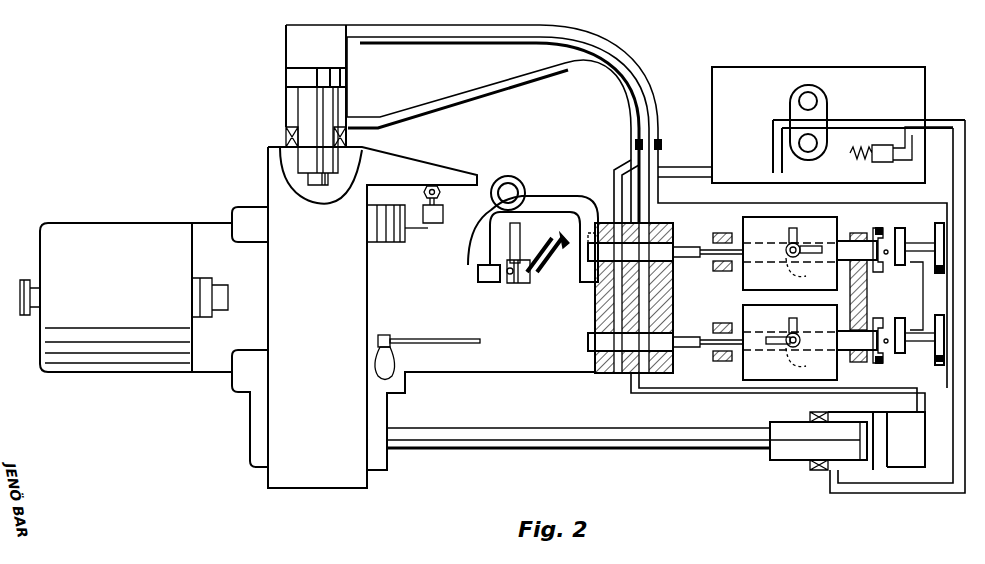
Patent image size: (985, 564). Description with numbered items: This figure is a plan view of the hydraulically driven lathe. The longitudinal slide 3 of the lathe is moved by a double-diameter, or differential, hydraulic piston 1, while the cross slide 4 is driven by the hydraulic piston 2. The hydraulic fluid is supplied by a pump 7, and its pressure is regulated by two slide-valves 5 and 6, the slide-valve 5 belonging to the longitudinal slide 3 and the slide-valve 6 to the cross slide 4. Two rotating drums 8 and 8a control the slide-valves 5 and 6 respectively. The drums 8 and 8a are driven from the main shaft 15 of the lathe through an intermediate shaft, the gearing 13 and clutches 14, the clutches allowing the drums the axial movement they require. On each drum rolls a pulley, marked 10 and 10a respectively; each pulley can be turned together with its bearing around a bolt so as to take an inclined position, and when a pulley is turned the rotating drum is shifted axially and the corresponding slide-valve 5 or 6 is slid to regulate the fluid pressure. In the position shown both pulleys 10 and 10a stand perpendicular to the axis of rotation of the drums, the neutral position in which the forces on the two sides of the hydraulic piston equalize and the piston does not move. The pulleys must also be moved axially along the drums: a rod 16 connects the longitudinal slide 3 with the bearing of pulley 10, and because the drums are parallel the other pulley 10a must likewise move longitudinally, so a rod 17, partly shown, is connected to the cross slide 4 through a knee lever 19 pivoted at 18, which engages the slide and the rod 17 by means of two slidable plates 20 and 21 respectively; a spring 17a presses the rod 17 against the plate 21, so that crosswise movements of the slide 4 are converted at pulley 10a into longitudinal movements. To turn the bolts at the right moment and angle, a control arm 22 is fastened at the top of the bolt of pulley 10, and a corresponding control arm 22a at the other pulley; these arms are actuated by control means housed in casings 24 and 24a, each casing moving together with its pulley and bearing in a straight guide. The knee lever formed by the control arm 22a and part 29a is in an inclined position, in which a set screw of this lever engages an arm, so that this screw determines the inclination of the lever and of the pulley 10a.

The differential hydraulic piston 1 is at (878, 462).
The hydraulic piston 2 is at (288, 78).
The longitudinal slide 3 is at (245, 380).
The cross slide 4 is at (286, 444).
The slide-valve 5 is at (598, 342).
The slide-valve 6 is at (605, 235).
The pump 7 is at (812, 100).
The rotating drum 8 is at (712, 338).
The rotating drum 8a is at (708, 262).
The pulley 10 is at (798, 364).
The pulley 10a is at (785, 276).
The gearing 13 is at (34, 298).
The clutches 14 is at (886, 350).
The main shaft 15 is at (216, 298).
The rod 16 is at (446, 340).
The rod 17 is at (536, 255).
The spring 17a is at (560, 236).
The pivot 18 is at (507, 183).
The knee lever 19 is at (481, 228).
The slidable plate 20 is at (436, 188).
The slidable plate 21 is at (516, 280).
The control arm 22 is at (797, 326).
The control arm 22a is at (790, 236).
The casing 24 is at (768, 381).
The casing 24a is at (760, 217).
The knee lever part 29a is at (812, 244).